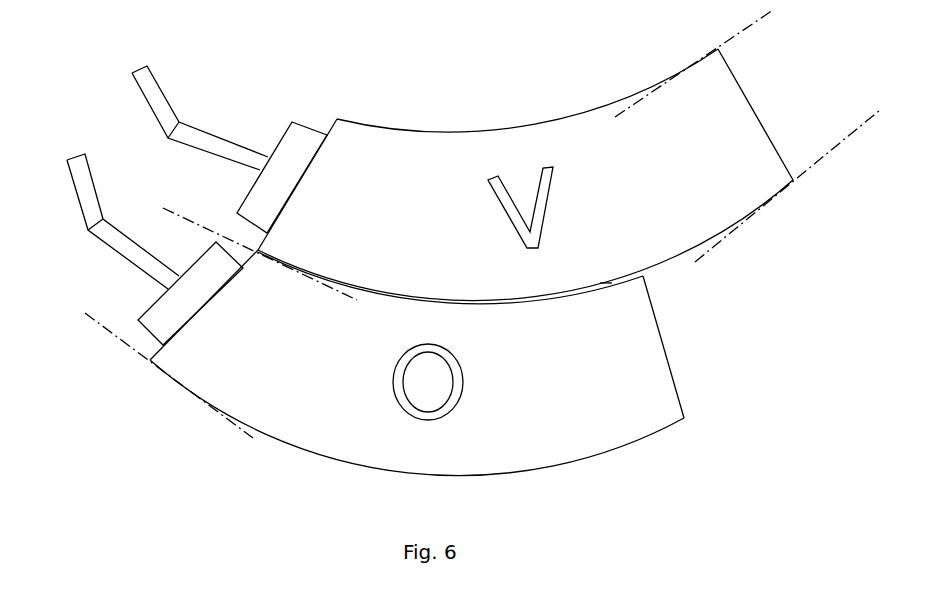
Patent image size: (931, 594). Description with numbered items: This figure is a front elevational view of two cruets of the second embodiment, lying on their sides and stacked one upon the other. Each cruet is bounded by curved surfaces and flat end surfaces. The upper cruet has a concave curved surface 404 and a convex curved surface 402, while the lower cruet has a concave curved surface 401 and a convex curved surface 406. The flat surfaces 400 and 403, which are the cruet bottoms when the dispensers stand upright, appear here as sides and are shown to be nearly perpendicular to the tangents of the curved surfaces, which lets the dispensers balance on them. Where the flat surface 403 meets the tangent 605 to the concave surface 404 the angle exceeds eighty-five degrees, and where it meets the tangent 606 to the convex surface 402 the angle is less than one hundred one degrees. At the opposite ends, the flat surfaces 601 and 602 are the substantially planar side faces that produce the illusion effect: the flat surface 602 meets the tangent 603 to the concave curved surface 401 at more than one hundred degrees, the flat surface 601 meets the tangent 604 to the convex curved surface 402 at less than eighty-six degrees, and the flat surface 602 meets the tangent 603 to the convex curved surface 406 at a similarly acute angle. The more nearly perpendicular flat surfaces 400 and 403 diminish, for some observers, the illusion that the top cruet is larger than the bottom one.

The flat surface 400 is at (663, 340).
The concave curved surface 401 is at (605, 285).
The convex curved surface 402 is at (663, 263).
The flat surface 403 is at (752, 110).
The concave curved surface 404 is at (555, 120).
The convex curved surface 406 is at (647, 437).
The flat surface 601 is at (302, 177).
The flat surface 602 is at (198, 310).
The tangent 603 is at (208, 230).
The tangent 604 is at (125, 342).
The tangent 605 is at (758, 21).
The tangent 606 is at (822, 155).